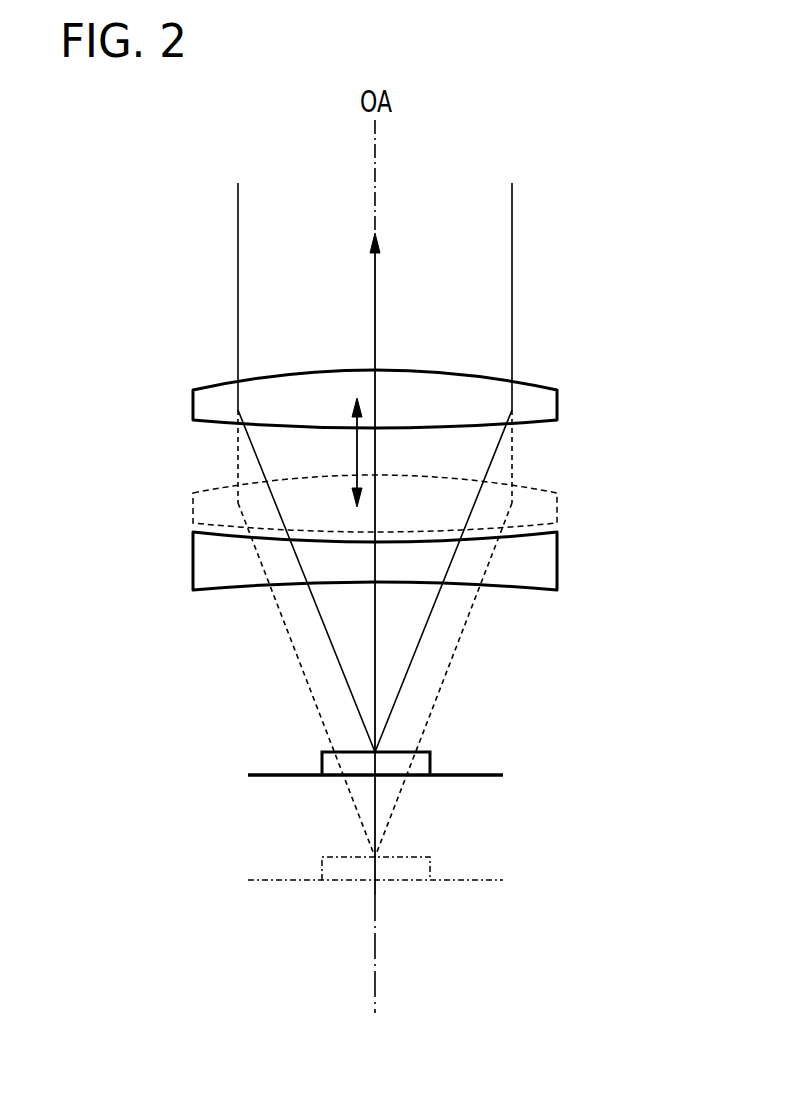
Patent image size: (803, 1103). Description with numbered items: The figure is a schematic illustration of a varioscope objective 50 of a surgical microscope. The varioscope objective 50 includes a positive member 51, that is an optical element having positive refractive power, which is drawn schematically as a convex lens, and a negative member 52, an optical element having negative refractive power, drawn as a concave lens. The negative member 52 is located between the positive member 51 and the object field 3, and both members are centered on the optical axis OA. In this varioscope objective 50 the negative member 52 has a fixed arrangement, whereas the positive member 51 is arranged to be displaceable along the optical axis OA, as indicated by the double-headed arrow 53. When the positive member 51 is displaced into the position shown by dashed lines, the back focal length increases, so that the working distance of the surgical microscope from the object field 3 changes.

The object field 3 is at (432, 765).
The varioscope objective 50 is at (167, 370).
The positive member 51 is at (559, 402).
The negative member 52 is at (559, 560).
The double-headed arrow 53 is at (350, 455).